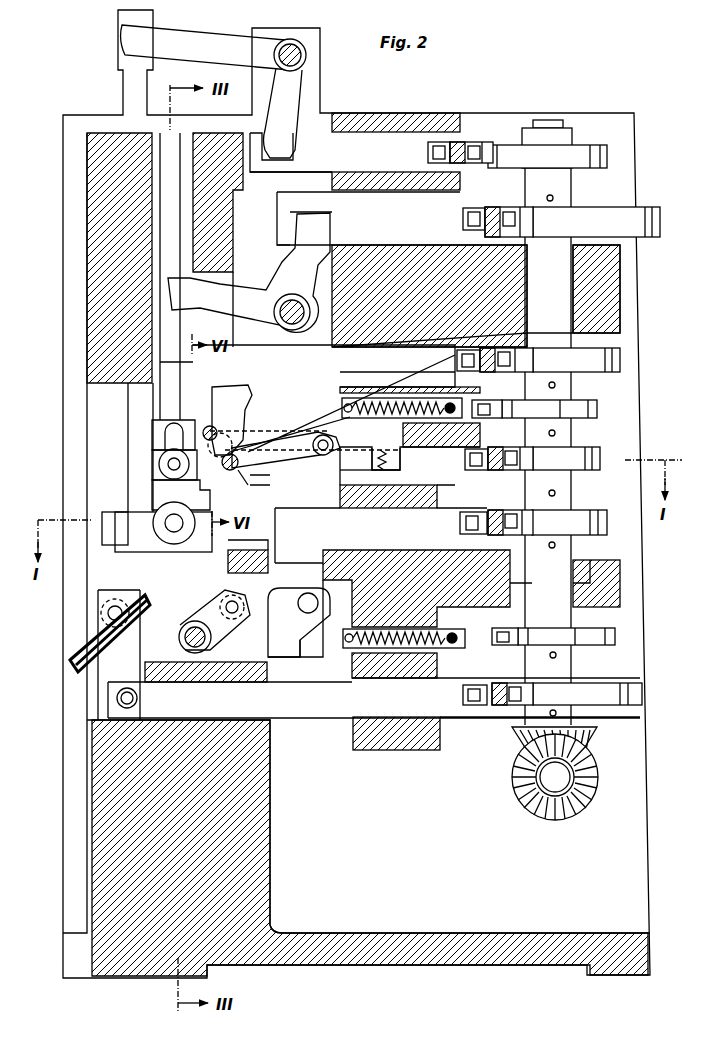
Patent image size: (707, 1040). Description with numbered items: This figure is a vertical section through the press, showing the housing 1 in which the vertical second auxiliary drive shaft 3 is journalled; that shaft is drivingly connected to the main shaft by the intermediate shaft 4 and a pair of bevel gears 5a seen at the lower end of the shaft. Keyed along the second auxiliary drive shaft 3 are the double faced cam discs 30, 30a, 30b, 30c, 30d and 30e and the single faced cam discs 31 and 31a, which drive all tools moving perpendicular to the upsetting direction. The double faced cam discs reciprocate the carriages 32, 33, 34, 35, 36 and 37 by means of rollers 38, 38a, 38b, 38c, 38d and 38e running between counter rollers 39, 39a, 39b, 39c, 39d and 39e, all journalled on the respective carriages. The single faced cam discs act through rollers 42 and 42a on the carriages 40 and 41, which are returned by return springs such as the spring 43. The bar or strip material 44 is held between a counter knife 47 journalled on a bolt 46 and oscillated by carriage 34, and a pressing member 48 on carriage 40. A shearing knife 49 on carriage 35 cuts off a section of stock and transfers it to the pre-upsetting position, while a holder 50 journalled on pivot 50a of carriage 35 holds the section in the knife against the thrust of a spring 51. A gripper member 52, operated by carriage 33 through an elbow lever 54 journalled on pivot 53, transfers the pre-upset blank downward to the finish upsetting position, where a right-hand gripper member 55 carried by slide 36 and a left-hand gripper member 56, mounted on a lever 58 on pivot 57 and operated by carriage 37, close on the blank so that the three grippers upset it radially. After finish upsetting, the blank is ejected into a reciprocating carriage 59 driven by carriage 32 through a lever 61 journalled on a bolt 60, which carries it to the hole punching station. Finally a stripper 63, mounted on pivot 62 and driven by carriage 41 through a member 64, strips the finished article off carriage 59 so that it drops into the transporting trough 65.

The housing 1 is at (100, 826).
The second auxiliary drive shaft 3 is at (547, 120).
The intermediate shaft 4 is at (575, 777).
The bevel gear pair 5a is at (590, 747).
The double faced cam disc 30 is at (590, 147).
The double faced cam disc 30a is at (597, 220).
The double faced cam disc 30b is at (586, 372).
The double faced cam disc 30c is at (584, 448).
The double faced cam disc 30d is at (582, 508).
The double faced cam disc 30e is at (615, 683).
The single faced cam disc 31 is at (597, 410).
The single faced cam disc 31a is at (593, 628).
The carriage 32 is at (308, 157).
The carriage 33 is at (323, 225).
The carriage 34 is at (397, 367).
The carriage 35 is at (356, 470).
The slide 36 is at (317, 539).
The carriage 37 is at (393, 690).
The roller 38 is at (432, 143).
The roller 38a is at (463, 215).
The roller 38b is at (457, 366).
The roller 38c is at (474, 470).
The roller 38d is at (460, 529).
The roller 38e is at (475, 705).
The counter roller 39 is at (482, 148).
The counter roller 39a is at (512, 222).
The counter roller 39b is at (516, 360).
The counter roller 39c is at (522, 462).
The counter roller 39d is at (522, 527).
The counter roller 39e is at (512, 705).
The carriage 40 is at (320, 418).
The carriage 41 is at (305, 640).
The roller 42 is at (495, 418).
The roller 42a is at (500, 646).
The return spring 43 is at (405, 400).
The bar or strip material 44 is at (245, 465).
The bolt 46 is at (145, 437).
The counter knife 47 is at (215, 480).
The pressing member 48 is at (245, 472).
The shearing knife 49 is at (270, 478).
The holder 50 is at (240, 445).
The pivot 50a is at (322, 437).
The spring 51 is at (390, 460).
The gripper member 52 is at (145, 395).
The pivot 53 is at (280, 322).
The elbow lever 54 is at (296, 268).
The right-hand gripper member 55 is at (232, 542).
The left-hand gripper member 56 is at (105, 520).
The pivot 57 is at (108, 618).
The lever 58 is at (112, 668).
The reciprocating carriage 59 is at (140, 503).
The bolt 60 is at (306, 47).
The lever 61 is at (298, 80).
The pivot 62 is at (180, 637).
The stripper 63 is at (220, 632).
The member 64 is at (272, 612).
The transporting trough 65 is at (80, 668).